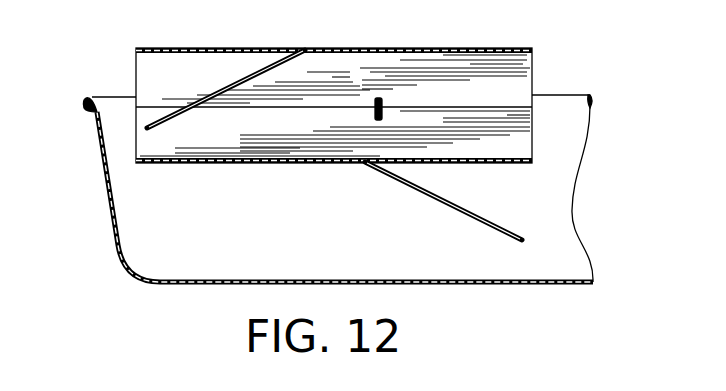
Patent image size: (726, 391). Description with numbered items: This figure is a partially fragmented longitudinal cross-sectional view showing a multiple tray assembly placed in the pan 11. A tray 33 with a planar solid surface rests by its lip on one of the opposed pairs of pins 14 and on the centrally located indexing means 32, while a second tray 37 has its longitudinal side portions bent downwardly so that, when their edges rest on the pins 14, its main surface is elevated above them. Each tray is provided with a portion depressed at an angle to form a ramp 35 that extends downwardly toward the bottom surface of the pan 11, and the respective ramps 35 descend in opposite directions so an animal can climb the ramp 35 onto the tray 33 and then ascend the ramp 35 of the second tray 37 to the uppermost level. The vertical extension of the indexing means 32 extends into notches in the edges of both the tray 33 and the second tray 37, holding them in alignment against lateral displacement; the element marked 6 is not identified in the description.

The pan 11 is at (112, 246).
The pins 14 is at (595, 96).
The bracket 6 is at (604, 103).
The indexing means 32 is at (373, 97).
The tray 33 is at (156, 163).
The ramp 35 is at (212, 92).
The second tray 37 is at (435, 47).